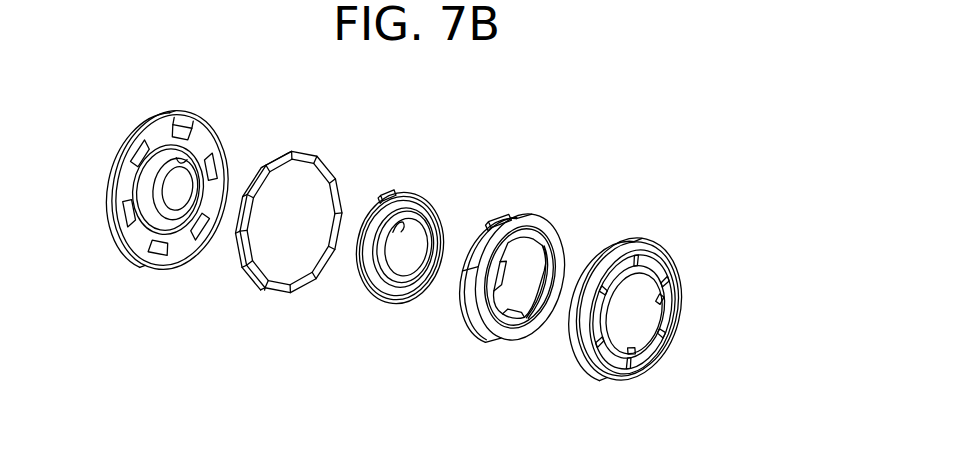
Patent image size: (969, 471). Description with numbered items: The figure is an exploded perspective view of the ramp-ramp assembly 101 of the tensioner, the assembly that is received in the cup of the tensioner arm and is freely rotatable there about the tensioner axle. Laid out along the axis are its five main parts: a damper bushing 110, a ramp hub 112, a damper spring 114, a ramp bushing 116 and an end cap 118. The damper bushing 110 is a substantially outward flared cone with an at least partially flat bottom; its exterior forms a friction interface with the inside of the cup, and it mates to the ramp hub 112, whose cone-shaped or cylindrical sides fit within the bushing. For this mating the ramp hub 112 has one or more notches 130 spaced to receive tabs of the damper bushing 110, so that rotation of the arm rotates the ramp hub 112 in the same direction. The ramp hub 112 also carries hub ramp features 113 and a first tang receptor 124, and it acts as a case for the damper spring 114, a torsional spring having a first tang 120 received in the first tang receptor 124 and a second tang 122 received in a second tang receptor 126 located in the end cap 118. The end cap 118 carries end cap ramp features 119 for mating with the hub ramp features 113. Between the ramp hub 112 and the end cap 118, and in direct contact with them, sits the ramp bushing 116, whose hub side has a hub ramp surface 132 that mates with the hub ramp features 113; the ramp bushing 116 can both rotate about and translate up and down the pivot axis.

The ramp-ramp assembly 101 is at (508, 99).
The damper bushing 110 is at (584, 373).
The ramp hub 112 is at (459, 327).
The hub ramp features 113 is at (461, 245).
The damper spring 114 is at (428, 190).
The ramp bushing 116 is at (326, 146).
The end cap 118 is at (216, 108).
The end cap ramp features 119 is at (178, 113).
The first tang 120 is at (383, 196).
The second tang 122 is at (392, 226).
The first tang receptor 124 is at (500, 212).
The second tang receptor 126 is at (172, 155).
The notches 130 is at (548, 253).
The hub ramp surface 132 is at (300, 296).